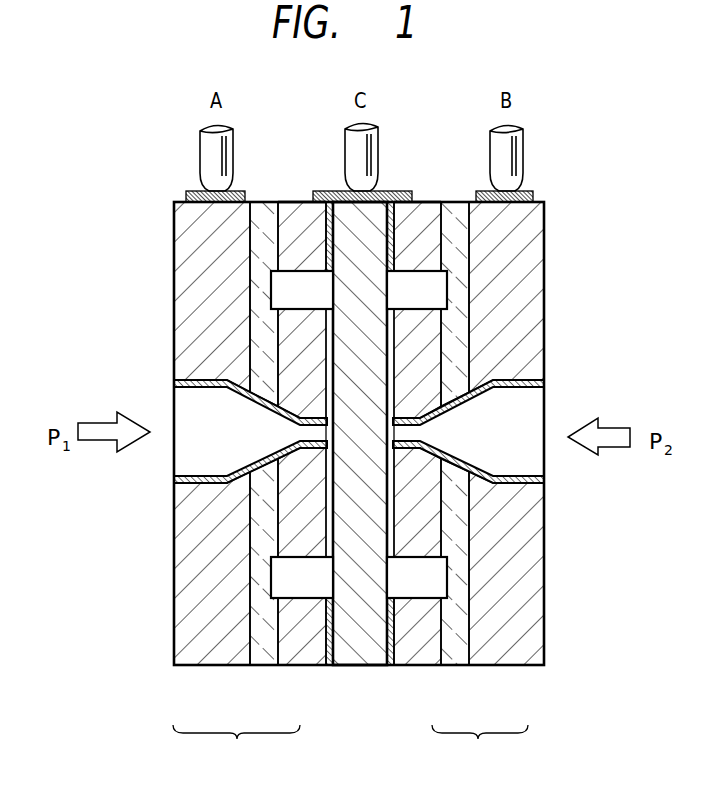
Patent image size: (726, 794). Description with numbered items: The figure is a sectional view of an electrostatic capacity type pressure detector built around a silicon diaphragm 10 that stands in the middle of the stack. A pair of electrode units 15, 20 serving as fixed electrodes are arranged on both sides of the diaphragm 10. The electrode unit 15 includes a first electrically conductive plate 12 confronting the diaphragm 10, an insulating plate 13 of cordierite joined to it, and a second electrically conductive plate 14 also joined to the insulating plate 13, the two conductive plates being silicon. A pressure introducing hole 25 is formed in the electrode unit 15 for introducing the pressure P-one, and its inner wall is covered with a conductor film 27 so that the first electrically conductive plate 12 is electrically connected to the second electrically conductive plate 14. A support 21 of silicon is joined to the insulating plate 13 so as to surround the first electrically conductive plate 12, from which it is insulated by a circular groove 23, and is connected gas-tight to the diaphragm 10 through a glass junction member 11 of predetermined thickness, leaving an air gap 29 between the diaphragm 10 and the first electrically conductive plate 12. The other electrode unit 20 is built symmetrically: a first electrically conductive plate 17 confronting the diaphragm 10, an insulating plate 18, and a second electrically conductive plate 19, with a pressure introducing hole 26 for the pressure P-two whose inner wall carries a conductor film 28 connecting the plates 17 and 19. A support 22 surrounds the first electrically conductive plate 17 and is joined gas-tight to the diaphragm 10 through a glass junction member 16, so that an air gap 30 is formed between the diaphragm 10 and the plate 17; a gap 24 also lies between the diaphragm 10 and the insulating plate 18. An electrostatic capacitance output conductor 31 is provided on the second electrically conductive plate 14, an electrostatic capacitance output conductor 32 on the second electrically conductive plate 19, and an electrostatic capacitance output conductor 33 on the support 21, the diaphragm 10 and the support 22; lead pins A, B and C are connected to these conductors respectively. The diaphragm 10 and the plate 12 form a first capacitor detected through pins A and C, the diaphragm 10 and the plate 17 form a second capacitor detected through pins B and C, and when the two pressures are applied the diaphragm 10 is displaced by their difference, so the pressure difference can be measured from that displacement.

The diaphragm 10 is at (357, 667).
The glass junction member 11 is at (327, 666).
The first electrically conductive plate 12 is at (297, 547).
The insulating plate 13 is at (256, 667).
The second electrically conductive plate 14 is at (196, 667).
The electrode unit 15 is at (236, 744).
The glass junction member 16 is at (387, 667).
The first electrically conductive plate 17 is at (415, 547).
The insulating plate 18 is at (452, 667).
The second electrically conductive plate 19 is at (503, 660).
The electrode unit 20 is at (480, 745).
The support 21 is at (293, 208).
The support 22 is at (428, 208).
The circular groove 23 is at (282, 287).
The gap 24 is at (437, 285).
The pressure introducing hole 25 is at (197, 387).
The pressure introducing hole 26 is at (522, 387).
The conductor film 27 is at (197, 472).
The conductor film 28 is at (522, 472).
The air gap 29 is at (330, 503).
The air gap 30 is at (390, 530).
The electrostatic capacitance output conductor 31 is at (190, 195).
The electrostatic capacitance output conductor 32 is at (523, 195).
The electrostatic capacitance output conductor 33 is at (388, 193).